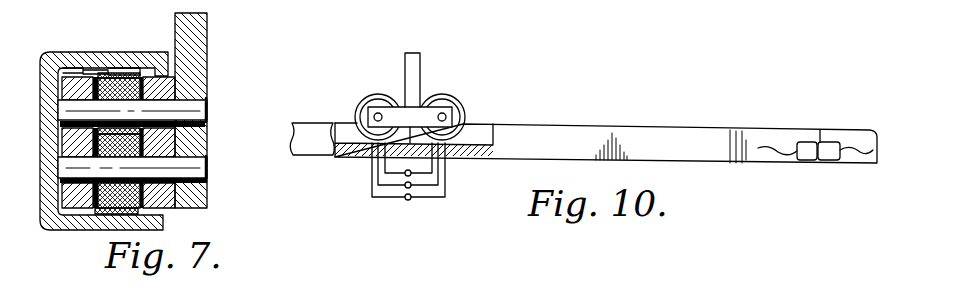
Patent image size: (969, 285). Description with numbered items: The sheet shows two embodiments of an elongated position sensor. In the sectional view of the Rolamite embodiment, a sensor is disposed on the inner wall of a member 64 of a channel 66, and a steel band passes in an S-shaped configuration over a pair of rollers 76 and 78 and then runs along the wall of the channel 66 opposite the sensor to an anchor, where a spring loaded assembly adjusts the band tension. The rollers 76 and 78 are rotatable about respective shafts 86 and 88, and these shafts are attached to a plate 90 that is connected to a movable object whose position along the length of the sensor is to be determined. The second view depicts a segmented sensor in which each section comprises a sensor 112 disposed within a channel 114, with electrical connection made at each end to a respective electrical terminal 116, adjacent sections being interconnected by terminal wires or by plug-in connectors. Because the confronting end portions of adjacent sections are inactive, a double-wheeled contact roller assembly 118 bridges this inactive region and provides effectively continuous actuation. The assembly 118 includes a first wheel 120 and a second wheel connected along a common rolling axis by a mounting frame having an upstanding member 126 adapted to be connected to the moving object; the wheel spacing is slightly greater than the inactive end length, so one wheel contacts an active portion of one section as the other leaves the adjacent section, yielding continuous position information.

In FIG. 7, the member 64 is at (147, 63).
In FIG. 7, the channel 66 is at (42, 73).
In FIG. 7, the roller 76 is at (110, 80).
In FIG. 7, the roller 78 is at (110, 213).
In FIG. 7, the shaft 86 is at (197, 110).
In FIG. 7, the shaft 88 is at (198, 173).
In FIG. 7, the plate 90 is at (203, 20).
In FIG. 10, the sensor 112 is at (805, 150).
In FIG. 10, the channel 114 is at (480, 158).
In FIG. 10, the electrical terminal 116 is at (838, 153).
In FIG. 10, the contact roller assembly 118 is at (426, 102).
In FIG. 10, the wheel 120 is at (368, 98).
In FIG. 10, the upstanding member 126 is at (412, 82).